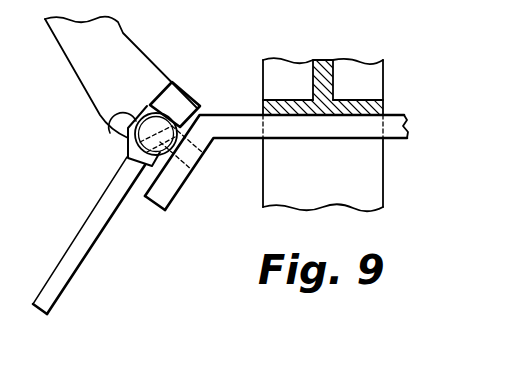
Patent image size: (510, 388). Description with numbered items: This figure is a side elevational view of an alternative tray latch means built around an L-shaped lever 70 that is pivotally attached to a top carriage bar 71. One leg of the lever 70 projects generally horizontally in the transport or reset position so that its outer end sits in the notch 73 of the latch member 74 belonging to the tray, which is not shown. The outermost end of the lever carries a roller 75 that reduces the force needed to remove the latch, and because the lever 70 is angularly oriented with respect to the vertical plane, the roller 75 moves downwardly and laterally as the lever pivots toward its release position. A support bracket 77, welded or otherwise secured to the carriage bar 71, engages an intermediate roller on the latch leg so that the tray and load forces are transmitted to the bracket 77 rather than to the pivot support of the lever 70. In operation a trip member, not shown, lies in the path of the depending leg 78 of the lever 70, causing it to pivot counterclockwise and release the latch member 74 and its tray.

The L-shaped lever 70 is at (112, 162).
The top carriage bar 71 is at (333, 73).
The notch 73 is at (156, 105).
The latch member 74 is at (131, 57).
The roller 75 is at (113, 130).
The support bracket 77 is at (172, 188).
The depending leg 78 is at (92, 237).